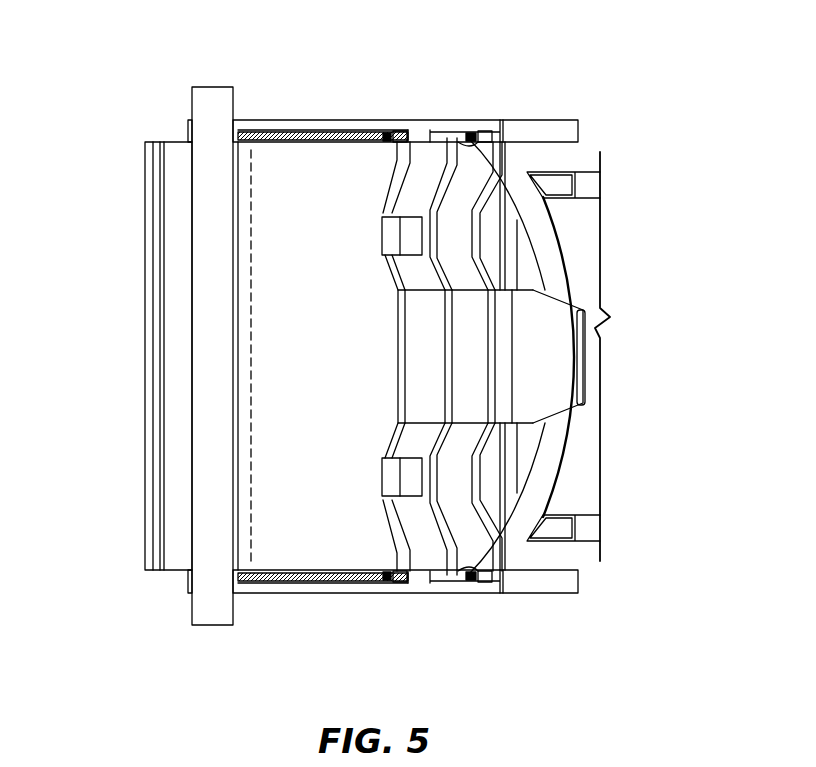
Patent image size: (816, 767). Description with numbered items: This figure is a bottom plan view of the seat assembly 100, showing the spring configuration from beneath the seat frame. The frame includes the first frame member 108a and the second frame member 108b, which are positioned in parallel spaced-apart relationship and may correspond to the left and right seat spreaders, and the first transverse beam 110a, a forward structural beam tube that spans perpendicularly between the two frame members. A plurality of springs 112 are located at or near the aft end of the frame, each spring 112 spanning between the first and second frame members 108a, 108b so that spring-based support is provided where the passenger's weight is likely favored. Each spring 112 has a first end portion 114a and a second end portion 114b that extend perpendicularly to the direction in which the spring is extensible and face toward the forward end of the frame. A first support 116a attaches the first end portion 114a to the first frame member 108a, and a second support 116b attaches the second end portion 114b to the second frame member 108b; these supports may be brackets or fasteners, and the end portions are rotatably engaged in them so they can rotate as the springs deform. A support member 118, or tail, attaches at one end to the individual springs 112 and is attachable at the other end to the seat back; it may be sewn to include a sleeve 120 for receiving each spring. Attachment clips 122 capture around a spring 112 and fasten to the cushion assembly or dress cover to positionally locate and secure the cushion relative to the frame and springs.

The seat assembly 100 is at (142, 100).
The first frame member 108a is at (532, 128).
The second frame member 108b is at (530, 582).
The first transverse beam 110a is at (202, 608).
The spring 112 is at (390, 210).
The first end portion 114a is at (385, 135).
The second end portion 114b is at (380, 577).
The first support 116a is at (395, 135).
The second support 116b is at (398, 578).
The support member 118 is at (567, 380).
The sleeve 120 is at (493, 327).
The attachment clip 122 is at (388, 463).